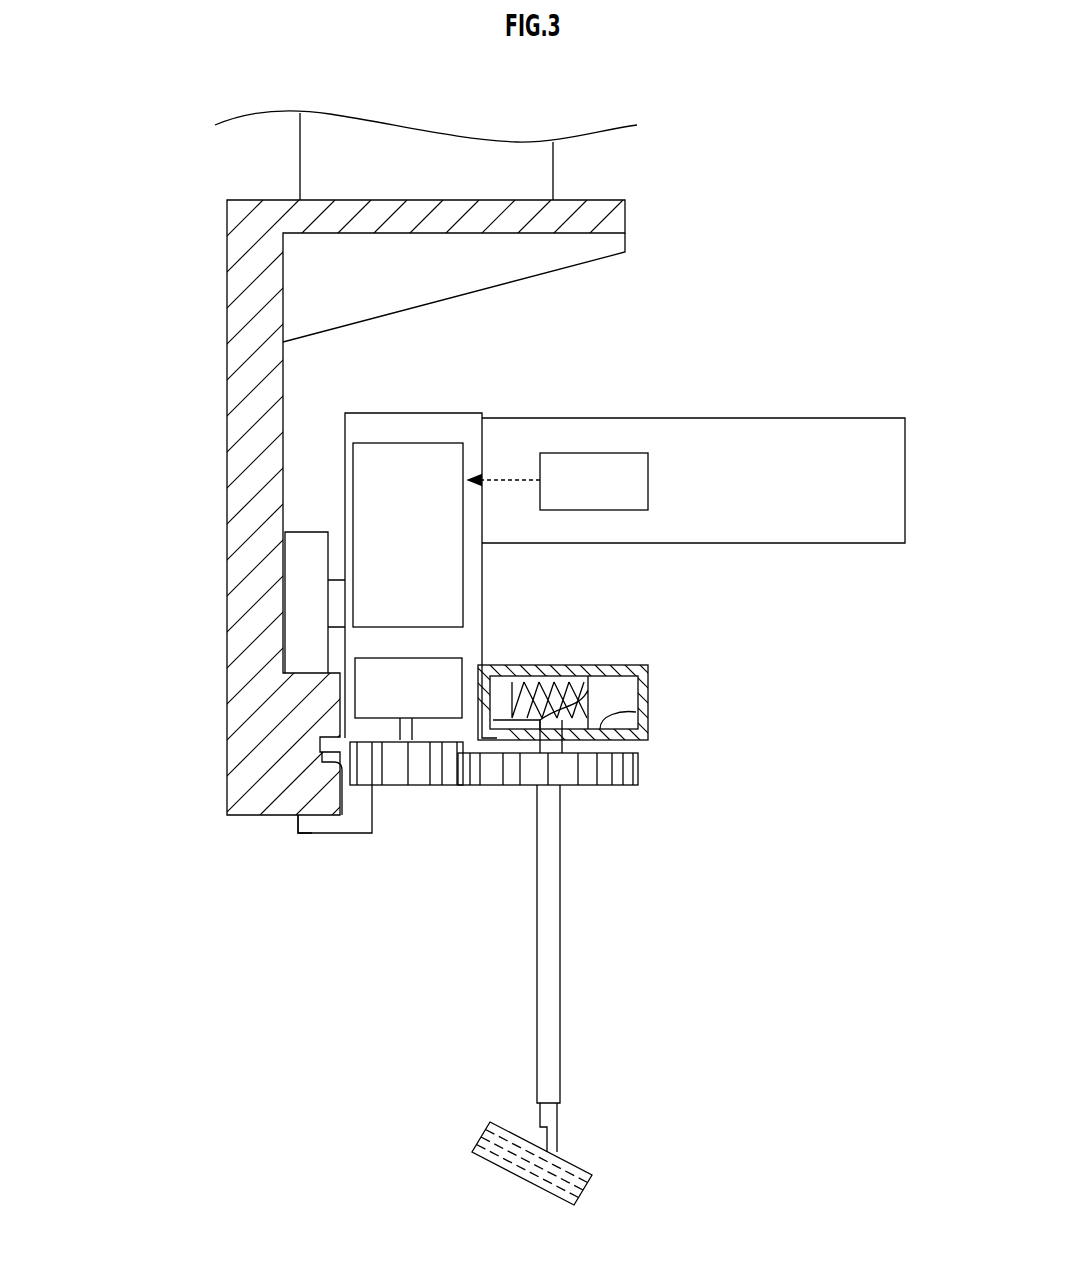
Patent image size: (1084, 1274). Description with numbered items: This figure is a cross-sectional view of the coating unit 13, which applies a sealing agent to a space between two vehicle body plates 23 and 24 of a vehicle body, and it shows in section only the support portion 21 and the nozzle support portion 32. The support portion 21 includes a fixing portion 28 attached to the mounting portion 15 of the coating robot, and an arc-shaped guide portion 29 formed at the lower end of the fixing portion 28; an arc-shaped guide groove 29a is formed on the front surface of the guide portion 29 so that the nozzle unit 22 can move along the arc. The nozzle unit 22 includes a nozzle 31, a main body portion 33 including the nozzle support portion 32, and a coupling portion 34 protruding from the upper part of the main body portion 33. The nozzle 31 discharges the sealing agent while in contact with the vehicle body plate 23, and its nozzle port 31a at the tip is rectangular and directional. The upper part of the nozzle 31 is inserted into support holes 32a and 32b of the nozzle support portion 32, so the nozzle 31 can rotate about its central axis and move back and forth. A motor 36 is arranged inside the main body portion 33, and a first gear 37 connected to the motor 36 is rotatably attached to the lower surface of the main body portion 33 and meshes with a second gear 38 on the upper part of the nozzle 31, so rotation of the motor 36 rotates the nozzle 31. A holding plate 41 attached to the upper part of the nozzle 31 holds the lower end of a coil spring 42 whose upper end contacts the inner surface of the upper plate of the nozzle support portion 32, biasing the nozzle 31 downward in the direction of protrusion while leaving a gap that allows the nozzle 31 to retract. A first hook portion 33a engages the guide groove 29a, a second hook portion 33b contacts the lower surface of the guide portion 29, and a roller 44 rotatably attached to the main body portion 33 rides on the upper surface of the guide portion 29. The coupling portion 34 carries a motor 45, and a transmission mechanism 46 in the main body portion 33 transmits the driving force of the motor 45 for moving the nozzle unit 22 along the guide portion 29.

The coating unit 13 is at (790, 252).
The mounting portion 15 is at (537, 172).
The support portion 21 is at (542, 510).
The nozzle unit 22 is at (767, 830).
The vehicle body plate 23 is at (532, 1152).
The vehicle body plate 24 is at (522, 1178).
The fixing portion 28 is at (243, 484).
The guide portion 29 is at (243, 690).
The guide groove 29a is at (322, 745).
The nozzle 31 is at (588, 938).
The nozzle port 31a is at (565, 1157).
The nozzle support portion 32 is at (582, 684).
The support hole 32a is at (548, 666).
The support hole 32b is at (605, 743).
The main body portion 33 is at (450, 425).
The first hook portion 33a is at (350, 793).
The second hook portion 33b is at (310, 835).
The coupling portion 34 is at (810, 448).
The motor 36 is at (458, 658).
The first gear 37 is at (405, 773).
The second gear 38 is at (606, 786).
The holding plate 41 is at (600, 722).
The coil spring 42 is at (624, 682).
The roller 44 is at (308, 555).
The motor 45 is at (593, 453).
The transmission mechanism 46 is at (382, 445).